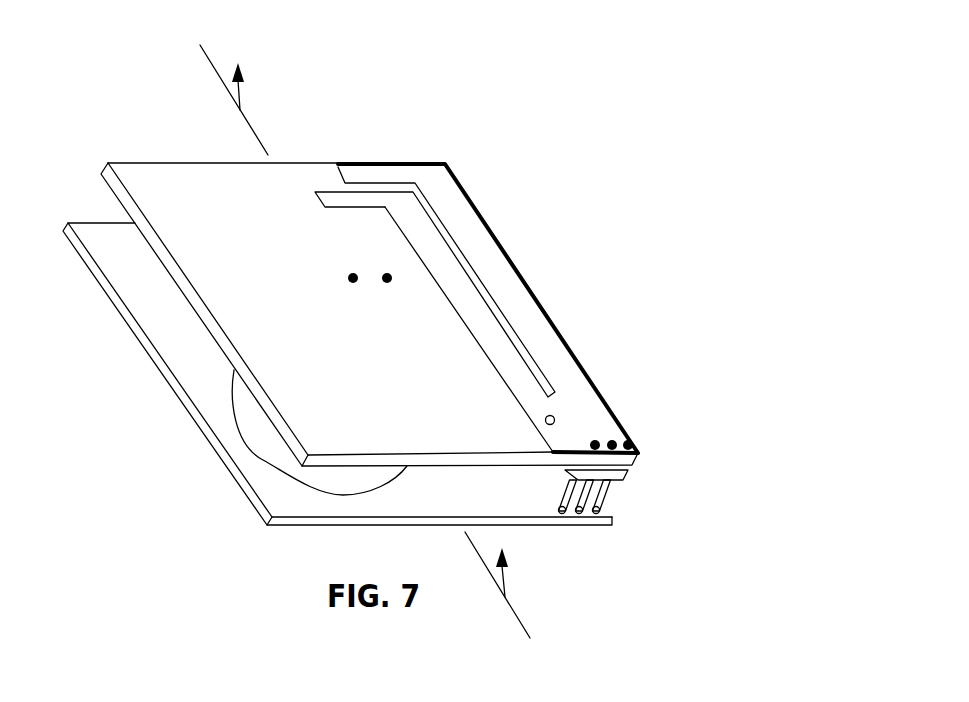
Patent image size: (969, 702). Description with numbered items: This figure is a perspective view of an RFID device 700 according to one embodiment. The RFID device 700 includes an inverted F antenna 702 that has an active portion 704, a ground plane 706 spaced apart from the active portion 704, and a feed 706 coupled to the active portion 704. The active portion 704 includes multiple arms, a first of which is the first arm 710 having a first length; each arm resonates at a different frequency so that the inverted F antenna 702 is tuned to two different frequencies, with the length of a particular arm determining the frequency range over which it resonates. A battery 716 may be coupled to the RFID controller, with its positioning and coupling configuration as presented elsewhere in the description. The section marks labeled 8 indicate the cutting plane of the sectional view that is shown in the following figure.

The RFID device 700 is at (524, 90).
The inverted F antenna 702 is at (550, 298).
The active portion 704 is at (584, 383).
The ground plane 706 is at (187, 343).
The first arm 710 is at (360, 177).
The battery 716 is at (253, 429).
The section line for FIG. 8 is at (369, 339).